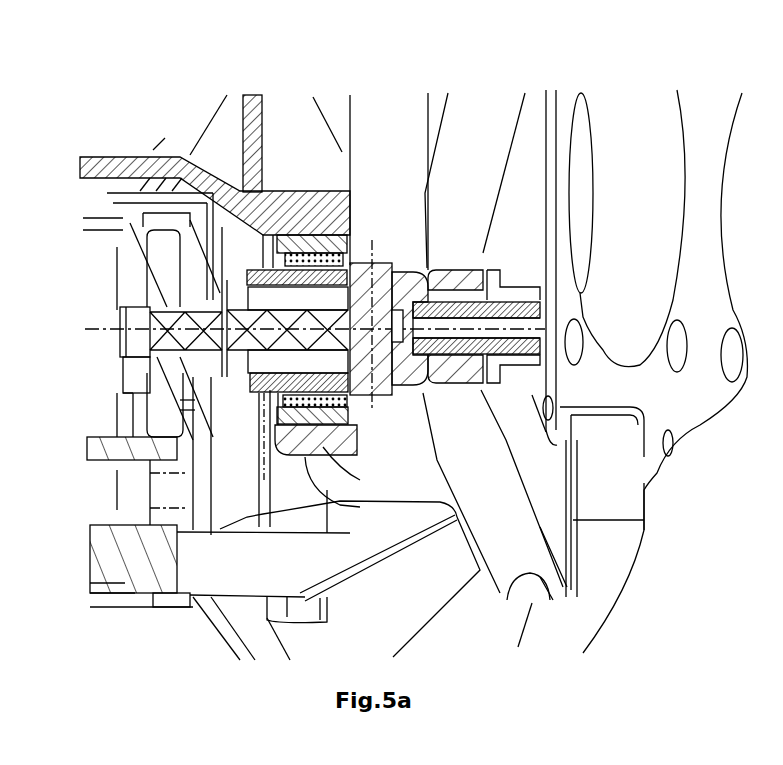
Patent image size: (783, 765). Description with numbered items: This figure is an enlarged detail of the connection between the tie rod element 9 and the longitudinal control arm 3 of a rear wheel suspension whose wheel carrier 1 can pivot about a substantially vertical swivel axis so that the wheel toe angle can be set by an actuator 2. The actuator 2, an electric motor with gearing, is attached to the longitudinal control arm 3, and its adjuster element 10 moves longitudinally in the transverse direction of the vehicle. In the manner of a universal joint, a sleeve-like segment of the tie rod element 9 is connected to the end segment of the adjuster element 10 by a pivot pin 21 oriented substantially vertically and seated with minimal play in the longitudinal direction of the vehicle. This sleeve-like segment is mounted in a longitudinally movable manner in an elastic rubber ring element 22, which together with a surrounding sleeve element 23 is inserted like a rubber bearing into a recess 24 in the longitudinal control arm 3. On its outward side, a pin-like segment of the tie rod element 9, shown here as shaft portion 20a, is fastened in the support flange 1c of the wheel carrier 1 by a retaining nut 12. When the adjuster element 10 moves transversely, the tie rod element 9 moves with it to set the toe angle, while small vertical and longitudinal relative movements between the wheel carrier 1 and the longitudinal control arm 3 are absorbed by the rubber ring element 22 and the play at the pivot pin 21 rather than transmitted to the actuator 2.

The wheel carrier 1 is at (700, 260).
The support flange 1c is at (457, 268).
The actuator 2 is at (128, 224).
The longitudinal control arm 3 is at (240, 135).
The tie rod element 9 is at (243, 345).
The adjuster element 10 is at (258, 405).
The retaining nut 12 is at (517, 275).
The shaft 20a is at (512, 313).
The pivot pin 21 is at (380, 270).
The rubber ring element 22 is at (283, 260).
The sleeve element 23 is at (303, 237).
The recess 24 is at (320, 205).